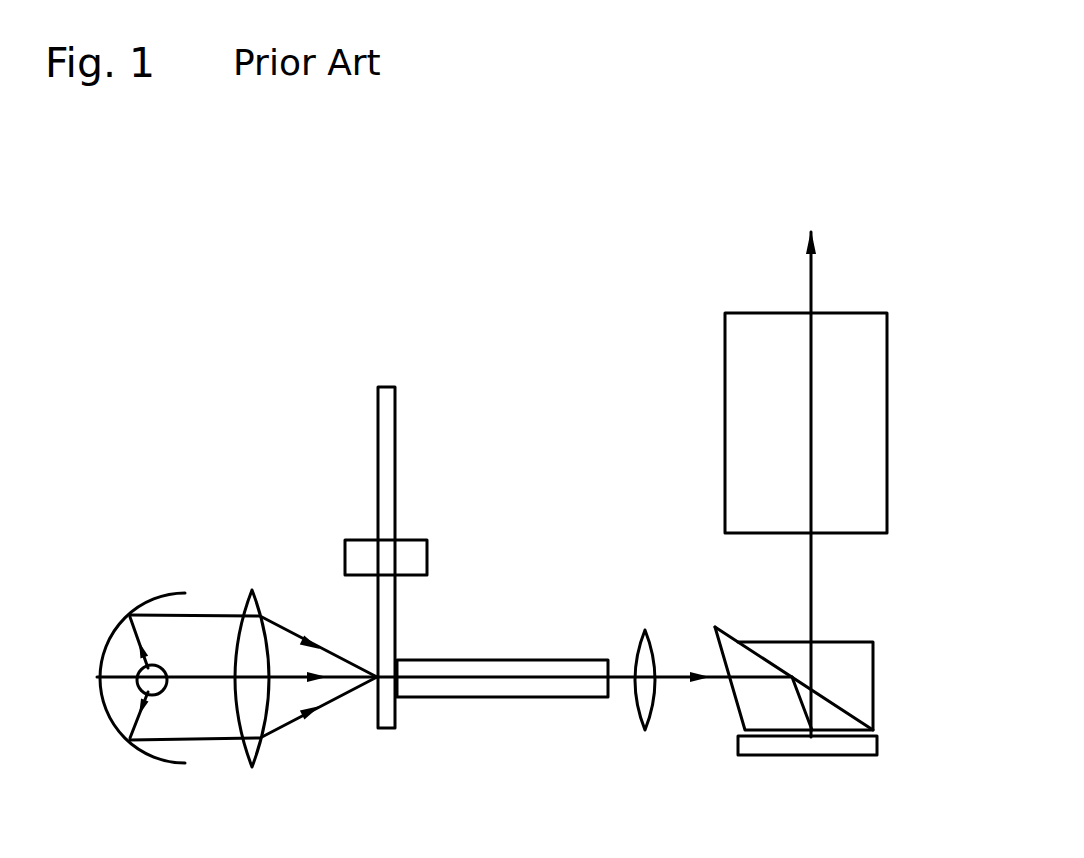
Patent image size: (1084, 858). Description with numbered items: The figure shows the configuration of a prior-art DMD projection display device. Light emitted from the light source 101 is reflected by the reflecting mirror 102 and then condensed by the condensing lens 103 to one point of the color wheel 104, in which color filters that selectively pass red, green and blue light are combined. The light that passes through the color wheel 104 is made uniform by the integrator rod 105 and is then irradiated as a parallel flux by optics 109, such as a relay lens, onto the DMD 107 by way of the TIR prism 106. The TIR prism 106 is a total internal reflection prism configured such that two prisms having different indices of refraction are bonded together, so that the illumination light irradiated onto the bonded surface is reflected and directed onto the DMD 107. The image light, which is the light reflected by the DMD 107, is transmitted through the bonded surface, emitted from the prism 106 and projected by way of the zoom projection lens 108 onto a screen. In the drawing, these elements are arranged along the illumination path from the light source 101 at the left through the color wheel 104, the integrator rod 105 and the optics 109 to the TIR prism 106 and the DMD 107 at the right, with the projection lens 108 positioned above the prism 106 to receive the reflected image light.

The light source 101 is at (160, 667).
The reflecting mirror 102 is at (147, 753).
The condensing lens 103 is at (257, 595).
The color wheel 104 is at (383, 463).
The integrator rod 105 is at (500, 690).
The TIR prism 106 is at (865, 682).
The DMD 107 is at (817, 743).
The zoom projection lens 108 is at (868, 327).
The optics 109 is at (650, 713).